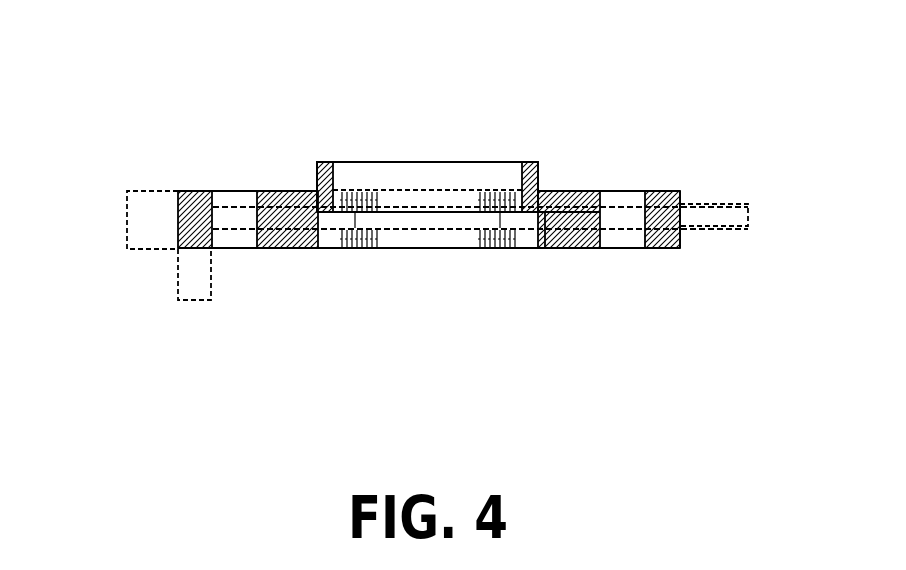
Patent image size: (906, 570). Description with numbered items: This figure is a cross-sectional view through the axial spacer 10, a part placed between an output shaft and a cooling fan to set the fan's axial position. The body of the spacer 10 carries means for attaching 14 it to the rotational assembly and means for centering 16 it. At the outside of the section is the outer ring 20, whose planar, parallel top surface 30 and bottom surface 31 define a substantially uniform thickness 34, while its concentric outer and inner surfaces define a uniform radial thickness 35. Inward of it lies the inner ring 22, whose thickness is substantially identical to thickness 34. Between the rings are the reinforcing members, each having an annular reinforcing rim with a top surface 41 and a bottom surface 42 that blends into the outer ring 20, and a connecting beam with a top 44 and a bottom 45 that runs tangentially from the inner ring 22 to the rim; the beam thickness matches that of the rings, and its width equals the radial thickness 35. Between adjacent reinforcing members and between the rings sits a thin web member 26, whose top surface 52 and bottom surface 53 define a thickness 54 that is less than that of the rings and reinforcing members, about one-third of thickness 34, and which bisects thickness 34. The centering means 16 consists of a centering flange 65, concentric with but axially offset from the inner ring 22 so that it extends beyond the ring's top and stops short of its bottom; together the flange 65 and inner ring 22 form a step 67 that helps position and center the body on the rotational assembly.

The axial spacer 10 is at (574, 84).
The means for attaching 14 is at (622, 266).
The means for centering 16 is at (340, 148).
The outer ring 20 is at (680, 248).
The inner ring 22 is at (570, 248).
The web member 26 is at (620, 215).
The top surface 30 is at (663, 191).
The bottom surface 31 is at (660, 249).
The thickness 34 is at (127, 222).
The radial thickness 35 is at (190, 301).
The top surface 41 is at (212, 192).
The bottom surface 42 is at (212, 250).
The top 44 is at (300, 191).
The bottom 45 is at (296, 249).
The top surface 52 is at (244, 208).
The bottom surface 53 is at (213, 231).
The thickness 54 is at (748, 213).
The centering flange 65 is at (531, 162).
The step 67 is at (538, 212).